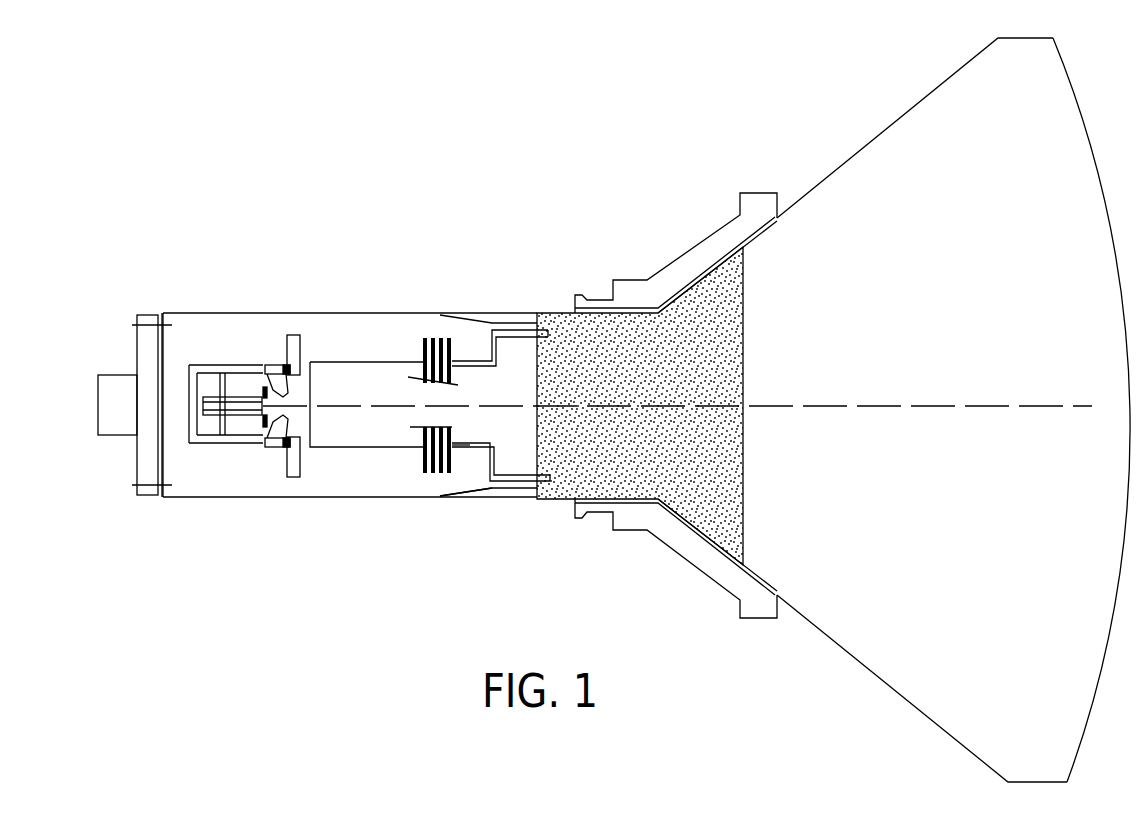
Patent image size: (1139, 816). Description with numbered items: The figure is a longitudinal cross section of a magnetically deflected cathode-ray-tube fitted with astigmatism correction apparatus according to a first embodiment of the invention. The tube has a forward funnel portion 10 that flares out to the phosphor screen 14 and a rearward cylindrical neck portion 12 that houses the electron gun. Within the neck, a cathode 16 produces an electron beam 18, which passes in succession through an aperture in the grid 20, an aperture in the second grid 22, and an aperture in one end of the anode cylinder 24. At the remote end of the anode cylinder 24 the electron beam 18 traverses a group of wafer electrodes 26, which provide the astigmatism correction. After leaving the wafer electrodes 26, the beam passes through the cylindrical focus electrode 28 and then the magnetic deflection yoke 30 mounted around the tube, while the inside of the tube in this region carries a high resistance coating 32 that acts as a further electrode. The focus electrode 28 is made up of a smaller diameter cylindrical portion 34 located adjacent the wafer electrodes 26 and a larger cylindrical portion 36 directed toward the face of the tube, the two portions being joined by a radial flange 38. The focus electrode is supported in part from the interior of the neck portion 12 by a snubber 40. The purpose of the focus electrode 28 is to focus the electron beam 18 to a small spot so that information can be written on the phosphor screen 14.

The funnel portion 10 is at (835, 172).
The neck portion 12 is at (197, 497).
The phosphor screen 14 is at (1128, 460).
The cathode 16 is at (242, 415).
The electron beam 18 is at (367, 410).
The grid 20 is at (262, 390).
The second grid 22 is at (290, 392).
The anode cylinder 24 is at (350, 362).
The wafer electrodes 26 is at (432, 336).
The focus electrode 28 is at (507, 486).
The magnetic deflection yoke 30 is at (672, 264).
The high resistance coating 32 is at (548, 312).
The smaller diameter cylindrical portion 34 is at (468, 447).
The larger cylindrical portion 36 is at (506, 329).
The radial flange 38 is at (502, 457).
The snubber 40 is at (472, 497).